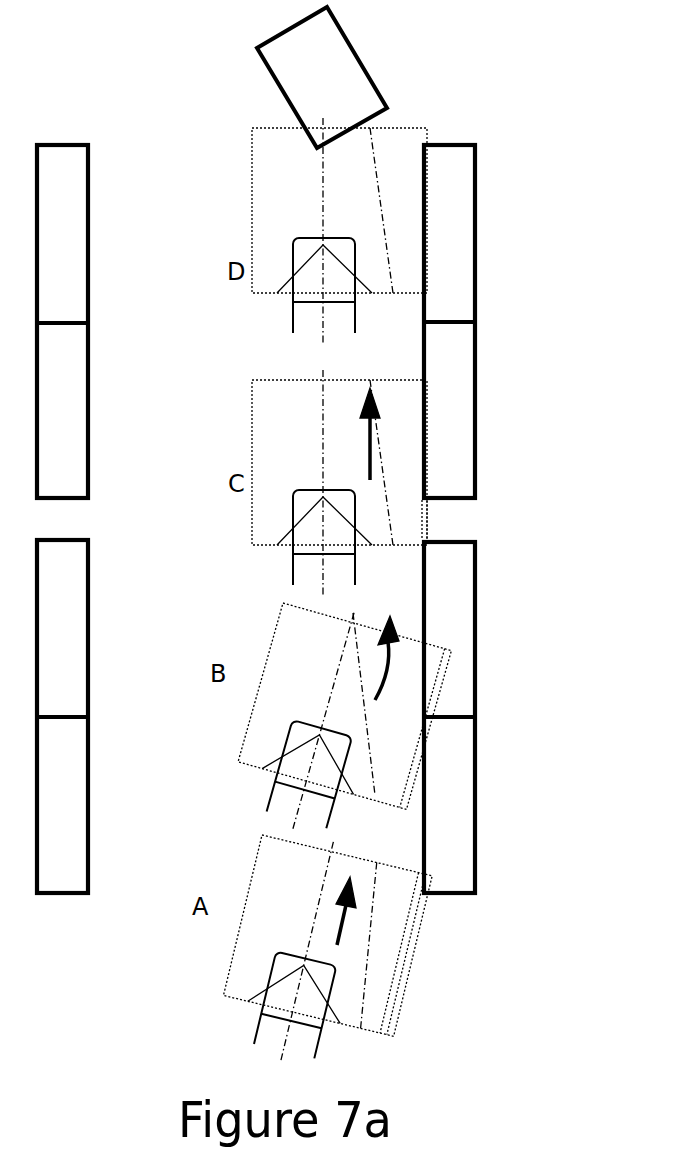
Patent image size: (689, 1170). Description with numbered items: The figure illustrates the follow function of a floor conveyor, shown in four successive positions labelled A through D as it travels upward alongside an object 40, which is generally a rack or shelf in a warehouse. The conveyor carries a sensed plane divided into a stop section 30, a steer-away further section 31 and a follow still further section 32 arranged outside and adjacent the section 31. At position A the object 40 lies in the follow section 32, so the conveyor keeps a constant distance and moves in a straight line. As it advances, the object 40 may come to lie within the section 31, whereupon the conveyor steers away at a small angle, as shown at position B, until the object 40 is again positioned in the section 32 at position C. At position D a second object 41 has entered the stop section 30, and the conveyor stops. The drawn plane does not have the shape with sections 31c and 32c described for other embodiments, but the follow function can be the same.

The stop section 30 is at (339, 231).
The further section 31 is at (398, 758).
The section 31c is at (400, 740).
The still further section 32 is at (423, 512).
The section 32c is at (425, 527).
The object 40 is at (90, 270).
The object 41 is at (271, 74).